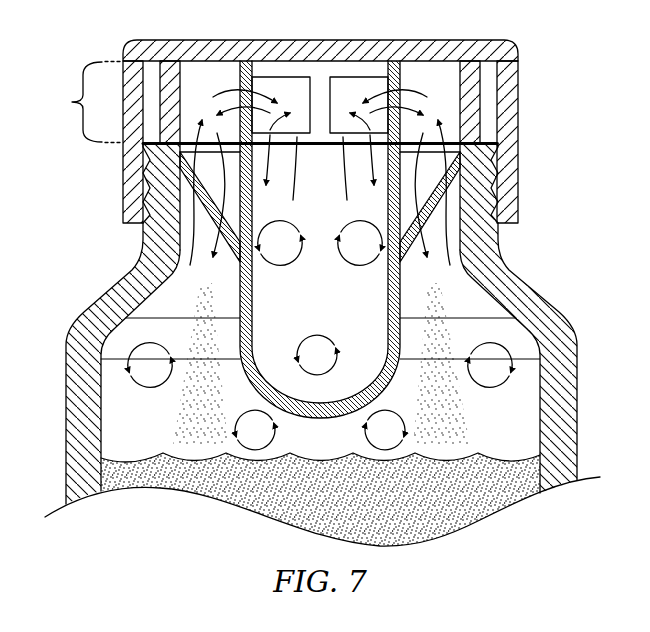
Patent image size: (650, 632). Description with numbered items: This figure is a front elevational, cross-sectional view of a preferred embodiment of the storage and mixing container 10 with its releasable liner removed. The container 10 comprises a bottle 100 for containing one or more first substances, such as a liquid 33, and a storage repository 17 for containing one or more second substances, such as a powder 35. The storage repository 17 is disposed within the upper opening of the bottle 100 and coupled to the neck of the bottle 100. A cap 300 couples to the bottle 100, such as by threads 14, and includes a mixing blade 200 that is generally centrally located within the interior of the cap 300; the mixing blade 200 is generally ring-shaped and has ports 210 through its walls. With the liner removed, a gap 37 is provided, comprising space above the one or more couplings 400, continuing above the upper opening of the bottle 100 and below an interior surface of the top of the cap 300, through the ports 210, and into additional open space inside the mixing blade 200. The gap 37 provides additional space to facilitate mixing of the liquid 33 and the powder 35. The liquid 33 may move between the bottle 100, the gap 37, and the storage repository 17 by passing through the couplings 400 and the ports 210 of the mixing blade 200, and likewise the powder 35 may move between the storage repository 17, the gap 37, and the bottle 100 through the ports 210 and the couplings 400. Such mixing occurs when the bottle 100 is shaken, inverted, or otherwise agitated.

The storage and mixing container 10 is at (553, 245).
The threads 14 is at (499, 171).
The storage repository 17 is at (242, 289).
The liquid 33 is at (500, 461).
The powder 35 is at (177, 407).
The gap 37 is at (85, 102).
The bottle 100 is at (559, 300).
The mixing blade 200 is at (242, 90).
The ports 210 is at (287, 93).
The cap 300 is at (519, 131).
The couplings 400 is at (143, 196).